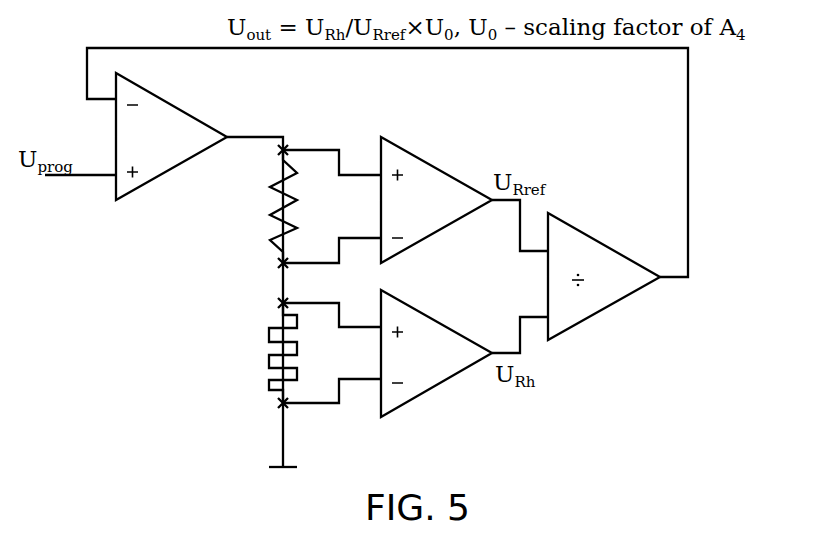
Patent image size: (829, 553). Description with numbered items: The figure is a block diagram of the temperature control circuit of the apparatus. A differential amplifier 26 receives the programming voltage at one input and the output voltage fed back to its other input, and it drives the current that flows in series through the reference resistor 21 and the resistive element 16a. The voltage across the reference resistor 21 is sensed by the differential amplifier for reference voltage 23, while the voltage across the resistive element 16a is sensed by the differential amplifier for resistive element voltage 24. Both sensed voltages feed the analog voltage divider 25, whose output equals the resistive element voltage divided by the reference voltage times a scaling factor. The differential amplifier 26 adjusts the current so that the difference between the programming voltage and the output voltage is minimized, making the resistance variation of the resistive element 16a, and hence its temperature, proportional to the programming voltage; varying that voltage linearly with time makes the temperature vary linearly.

The differential amplifier 26 is at (163, 152).
The differential amplifier for reference voltage 23 is at (435, 197).
The differential amplifier for resistive element voltage 24 is at (438, 353).
The analog voltage divider 25 is at (610, 273).
The reference resistor 21 is at (270, 213).
The resistive element 16a is at (270, 360).